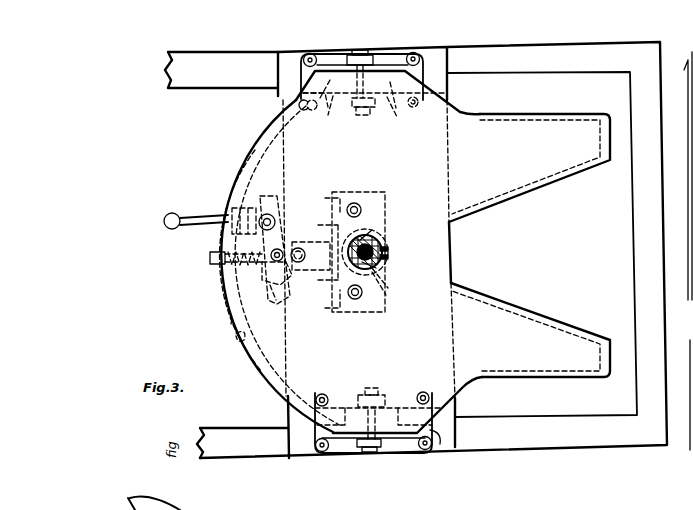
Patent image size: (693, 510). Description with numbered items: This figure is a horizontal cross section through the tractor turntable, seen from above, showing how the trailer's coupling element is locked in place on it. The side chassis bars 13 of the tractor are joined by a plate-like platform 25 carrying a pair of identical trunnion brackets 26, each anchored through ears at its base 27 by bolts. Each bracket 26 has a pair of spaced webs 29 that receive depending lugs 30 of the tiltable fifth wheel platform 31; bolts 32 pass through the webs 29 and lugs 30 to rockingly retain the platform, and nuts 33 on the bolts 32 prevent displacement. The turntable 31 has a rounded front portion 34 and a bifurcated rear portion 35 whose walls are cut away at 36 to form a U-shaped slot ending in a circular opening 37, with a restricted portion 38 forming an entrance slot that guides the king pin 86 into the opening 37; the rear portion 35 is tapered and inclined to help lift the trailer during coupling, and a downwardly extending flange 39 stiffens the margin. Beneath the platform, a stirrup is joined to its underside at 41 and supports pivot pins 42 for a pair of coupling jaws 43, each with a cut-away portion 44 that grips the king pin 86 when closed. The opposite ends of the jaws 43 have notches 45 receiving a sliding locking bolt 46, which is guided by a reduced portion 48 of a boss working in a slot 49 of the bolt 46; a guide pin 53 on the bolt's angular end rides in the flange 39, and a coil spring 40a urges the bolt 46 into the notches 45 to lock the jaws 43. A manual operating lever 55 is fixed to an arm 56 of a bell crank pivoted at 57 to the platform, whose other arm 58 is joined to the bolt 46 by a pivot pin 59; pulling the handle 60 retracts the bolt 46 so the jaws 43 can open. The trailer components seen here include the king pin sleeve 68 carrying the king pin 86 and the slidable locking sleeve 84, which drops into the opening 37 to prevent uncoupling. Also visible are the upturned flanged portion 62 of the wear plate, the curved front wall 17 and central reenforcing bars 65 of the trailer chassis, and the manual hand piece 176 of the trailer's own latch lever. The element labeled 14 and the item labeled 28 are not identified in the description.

The side chassis bars 13 is at (552, 45).
The housing 14 is at (636, 258).
The plate-like platform 25 is at (281, 96).
The trunnion brackets 26 is at (394, 58).
The base of bracket 27 is at (438, 446).
The hinge pin 28 is at (306, 54).
The spaced webs 29 is at (333, 58).
The lugs 30 is at (423, 76).
The tiltable fifth wheel platform 31 is at (268, 146).
The bolts 32 is at (360, 50).
The nuts 33 is at (362, 110).
The rounded front portion 34 is at (228, 316).
The bifurcated rear portion 35 is at (547, 120).
The inclined walls 36 is at (504, 198).
The circular opening 37 is at (375, 237).
The restricted portion 38 is at (384, 242).
The downwardly extending flange 39 is at (236, 334).
The coil spring 40a is at (242, 261).
The stirrup connection 41 is at (352, 190).
The pivot pins 42 is at (357, 203).
The coupling jaws 43 is at (328, 207).
The cut-away portion 44 is at (380, 282).
The notches 45 is at (322, 226).
The sliding locking bolt 46 is at (302, 270).
The reduced portion 48 is at (278, 296).
The slot 49 is at (302, 247).
The guide pin 53 is at (210, 258).
The manual operating lever 55 is at (201, 217).
The bell crank arm 56 is at (242, 208).
The bell crank pivot 57 is at (270, 198).
The bell crank arm 58 is at (256, 250).
The pivot pin 59 is at (270, 270).
The handle 60 is at (164, 221).
The upturned flanged portion 62 is at (691, 340).
The king pin sleeve 68 is at (388, 250).
The locking sleeve 84 is at (372, 230).
The king pin 86 is at (388, 258).
The manual hand piece 176 is at (688, 60).
The curved front wall 17 is at (274, 504).
The central reenforcing bars 65 is at (386, 504).